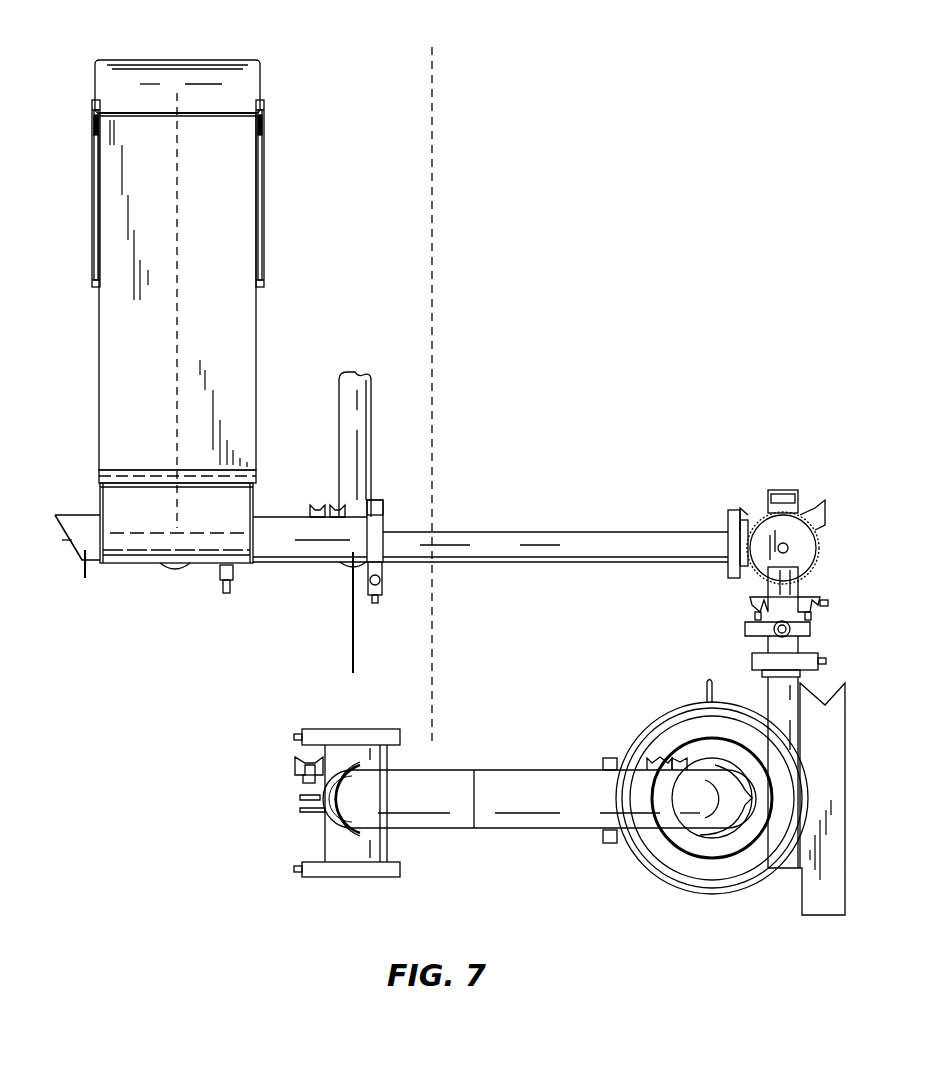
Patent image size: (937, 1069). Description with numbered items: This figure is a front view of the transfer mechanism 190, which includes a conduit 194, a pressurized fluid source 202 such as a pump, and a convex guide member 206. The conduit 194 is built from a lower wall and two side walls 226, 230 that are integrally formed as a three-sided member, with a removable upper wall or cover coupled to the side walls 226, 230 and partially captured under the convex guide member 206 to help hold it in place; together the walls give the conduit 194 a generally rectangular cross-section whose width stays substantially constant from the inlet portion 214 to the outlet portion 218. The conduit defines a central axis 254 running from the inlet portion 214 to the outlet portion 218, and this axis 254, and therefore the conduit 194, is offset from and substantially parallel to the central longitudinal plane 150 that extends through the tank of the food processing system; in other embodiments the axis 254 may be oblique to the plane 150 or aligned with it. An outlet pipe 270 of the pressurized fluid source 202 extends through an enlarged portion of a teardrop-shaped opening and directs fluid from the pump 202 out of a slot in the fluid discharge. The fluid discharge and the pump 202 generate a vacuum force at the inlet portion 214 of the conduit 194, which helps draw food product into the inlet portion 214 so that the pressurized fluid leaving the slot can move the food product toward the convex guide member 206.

The transfer mechanism 190 is at (567, 113).
The central longitudinal plane 150 is at (433, 243).
The central axis 254 is at (177, 202).
The convex guide member 206 is at (150, 75).
The outlet portion 218 is at (228, 133).
The conduit 194 is at (122, 350).
The side wall 230 is at (97, 435).
The side wall 226 is at (258, 328).
The inlet portion 214 is at (128, 522).
The outlet pipe 270 is at (527, 535).
The pressurized fluid source 202 is at (713, 875).